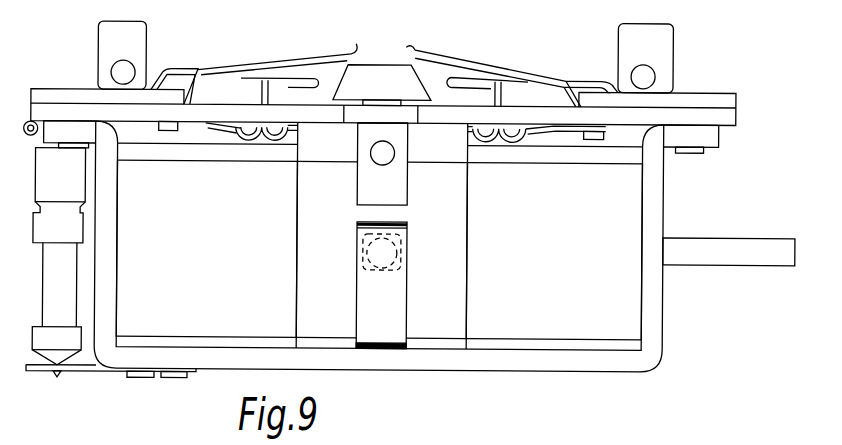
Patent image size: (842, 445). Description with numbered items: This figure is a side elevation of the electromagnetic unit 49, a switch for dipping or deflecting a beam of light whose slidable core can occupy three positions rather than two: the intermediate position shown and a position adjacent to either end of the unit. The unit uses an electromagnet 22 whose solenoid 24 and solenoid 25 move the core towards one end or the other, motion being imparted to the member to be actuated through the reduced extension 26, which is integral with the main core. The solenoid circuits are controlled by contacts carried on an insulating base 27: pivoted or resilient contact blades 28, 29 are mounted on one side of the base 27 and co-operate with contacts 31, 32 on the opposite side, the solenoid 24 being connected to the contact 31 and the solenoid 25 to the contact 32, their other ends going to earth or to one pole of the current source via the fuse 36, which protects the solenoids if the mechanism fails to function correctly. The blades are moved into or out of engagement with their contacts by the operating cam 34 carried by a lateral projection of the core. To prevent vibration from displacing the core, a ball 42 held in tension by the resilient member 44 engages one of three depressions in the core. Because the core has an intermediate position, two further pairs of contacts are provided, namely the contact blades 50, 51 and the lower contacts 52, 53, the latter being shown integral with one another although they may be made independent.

The electromagnet 22 is at (208, 349).
The solenoid 24 is at (554, 251).
The solenoid 25 is at (206, 248).
The reduced extension 26 is at (720, 239).
The insulating base 27 is at (727, 116).
The contact blade 28 is at (585, 77).
The contact blade 29 is at (183, 69).
The contact 31 is at (570, 128).
The contact 32 is at (207, 128).
The operating cam 34 is at (380, 64).
The fuse 36 is at (112, 263).
The ball 42 is at (362, 255).
The resilient member 44 is at (381, 285).
The unit 49 is at (672, 334).
The contact blade 50 is at (432, 55).
The contact blade 51 is at (352, 53).
The lower contact 52 is at (442, 127).
The lower contact 53 is at (322, 123).